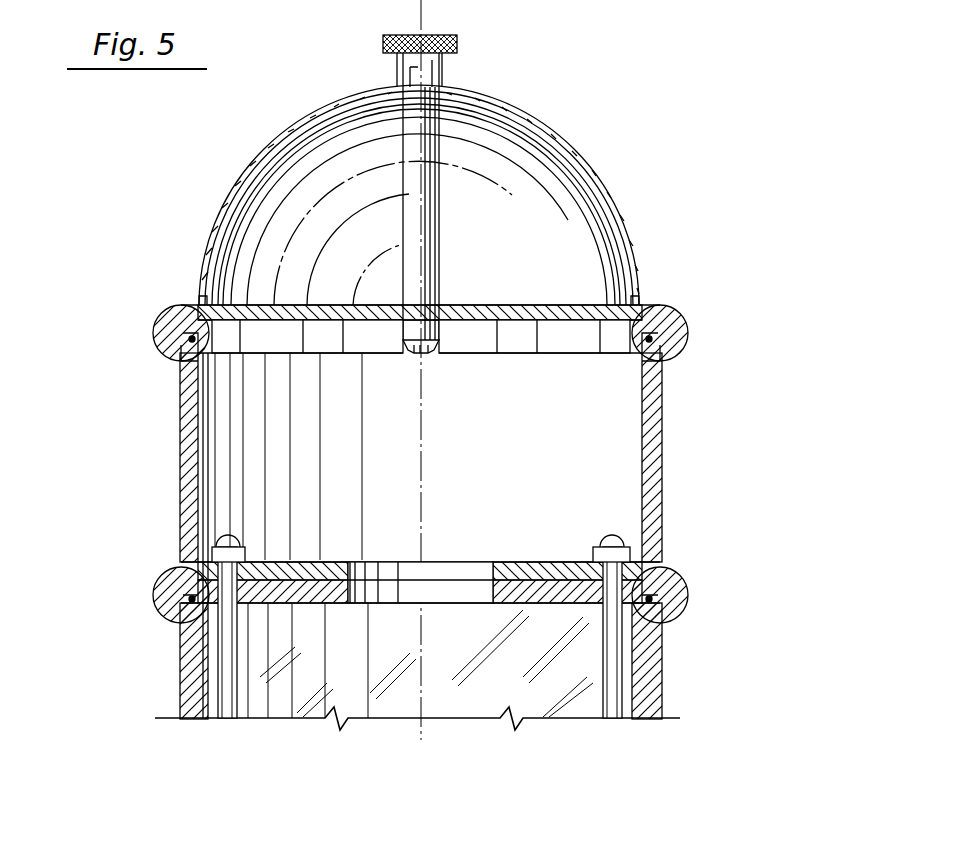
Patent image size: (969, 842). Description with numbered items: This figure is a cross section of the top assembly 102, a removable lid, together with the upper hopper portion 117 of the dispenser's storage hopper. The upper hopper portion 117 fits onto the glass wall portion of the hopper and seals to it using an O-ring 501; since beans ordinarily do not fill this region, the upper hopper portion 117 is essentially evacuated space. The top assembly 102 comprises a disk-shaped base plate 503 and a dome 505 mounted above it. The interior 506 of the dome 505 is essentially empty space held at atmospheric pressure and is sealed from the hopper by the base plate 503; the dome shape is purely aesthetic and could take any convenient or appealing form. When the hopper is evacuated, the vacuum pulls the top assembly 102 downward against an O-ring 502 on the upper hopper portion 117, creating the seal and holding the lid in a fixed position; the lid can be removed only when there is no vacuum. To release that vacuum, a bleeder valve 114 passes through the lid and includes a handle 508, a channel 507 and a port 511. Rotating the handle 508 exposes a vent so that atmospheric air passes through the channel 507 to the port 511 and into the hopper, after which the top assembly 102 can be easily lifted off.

The bleeder valve 114 is at (487, 35).
The top assembly 102 is at (226, 180).
The dome 505 is at (590, 166).
The interior 506 is at (556, 258).
The channel 507 is at (428, 215).
The handle 508 is at (384, 40).
The upper hopper portion 117 is at (140, 303).
The base plate 503 is at (660, 300).
The O-ring 502 is at (661, 345).
The port 511 is at (425, 355).
The O-ring 501 is at (672, 574).